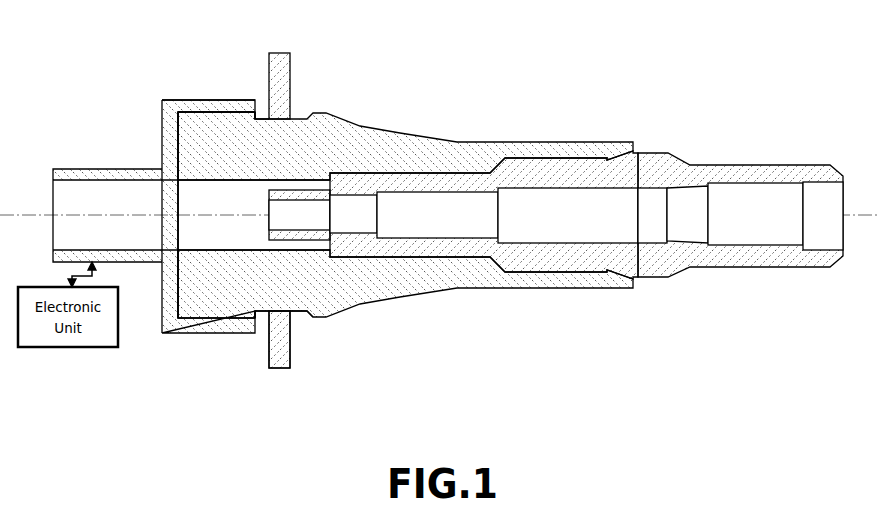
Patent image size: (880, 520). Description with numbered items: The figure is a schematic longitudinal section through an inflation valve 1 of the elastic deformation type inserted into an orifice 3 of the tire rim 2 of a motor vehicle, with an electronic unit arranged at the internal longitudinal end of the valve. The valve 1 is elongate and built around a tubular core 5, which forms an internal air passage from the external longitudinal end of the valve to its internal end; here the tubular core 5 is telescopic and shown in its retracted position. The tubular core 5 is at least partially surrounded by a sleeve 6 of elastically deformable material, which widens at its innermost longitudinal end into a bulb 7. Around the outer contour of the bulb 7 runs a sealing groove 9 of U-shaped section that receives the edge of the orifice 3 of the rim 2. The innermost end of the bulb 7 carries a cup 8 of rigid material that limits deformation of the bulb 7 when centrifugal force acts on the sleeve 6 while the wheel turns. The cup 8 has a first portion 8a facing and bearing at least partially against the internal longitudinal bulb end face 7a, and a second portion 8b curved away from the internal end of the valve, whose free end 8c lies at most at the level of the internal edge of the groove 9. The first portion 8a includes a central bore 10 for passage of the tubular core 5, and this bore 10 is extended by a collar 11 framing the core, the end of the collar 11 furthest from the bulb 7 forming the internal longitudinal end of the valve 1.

The inflation valve 1 is at (733, 270).
The tire rim 2 is at (290, 102).
The orifice 3 is at (272, 312).
The tubular core 5 is at (624, 262).
The sleeve 6 is at (456, 138).
The bulb 7 is at (272, 158).
The internal longitudinal bulb end face 7a is at (180, 258).
The cup 8 is at (193, 341).
The first portion 8a is at (170, 147).
The second portion 8b is at (217, 113).
The free end 8c is at (256, 112).
The sealing groove 9 is at (305, 312).
The central bore 10 is at (168, 215).
The collar 11 is at (87, 182).